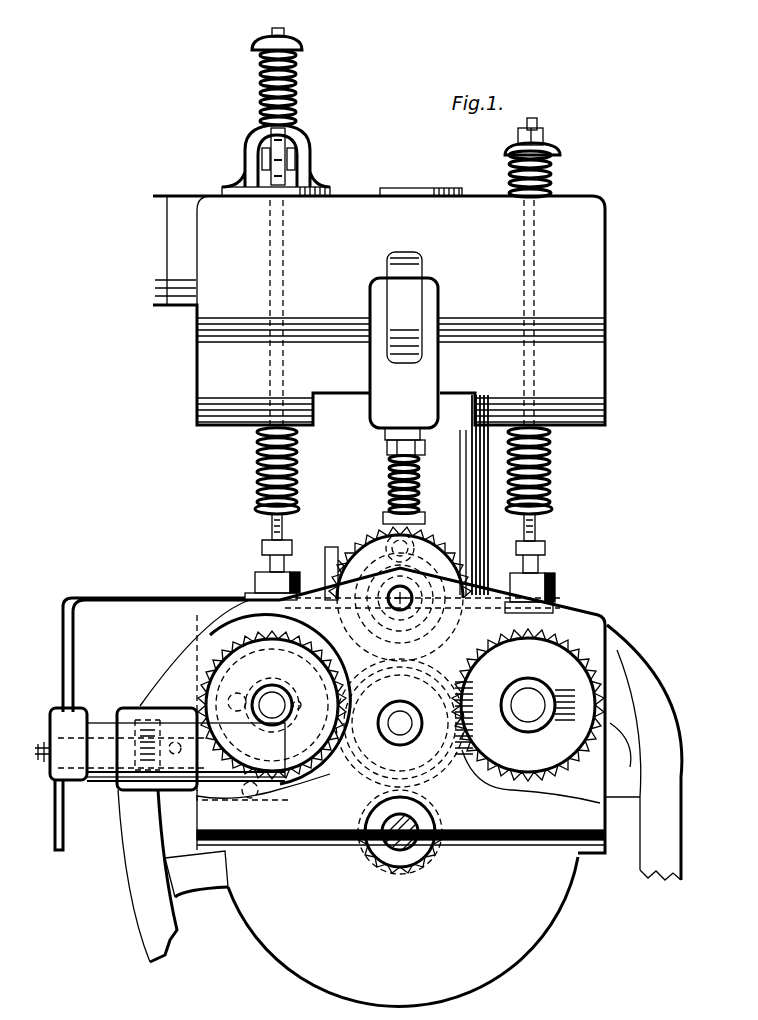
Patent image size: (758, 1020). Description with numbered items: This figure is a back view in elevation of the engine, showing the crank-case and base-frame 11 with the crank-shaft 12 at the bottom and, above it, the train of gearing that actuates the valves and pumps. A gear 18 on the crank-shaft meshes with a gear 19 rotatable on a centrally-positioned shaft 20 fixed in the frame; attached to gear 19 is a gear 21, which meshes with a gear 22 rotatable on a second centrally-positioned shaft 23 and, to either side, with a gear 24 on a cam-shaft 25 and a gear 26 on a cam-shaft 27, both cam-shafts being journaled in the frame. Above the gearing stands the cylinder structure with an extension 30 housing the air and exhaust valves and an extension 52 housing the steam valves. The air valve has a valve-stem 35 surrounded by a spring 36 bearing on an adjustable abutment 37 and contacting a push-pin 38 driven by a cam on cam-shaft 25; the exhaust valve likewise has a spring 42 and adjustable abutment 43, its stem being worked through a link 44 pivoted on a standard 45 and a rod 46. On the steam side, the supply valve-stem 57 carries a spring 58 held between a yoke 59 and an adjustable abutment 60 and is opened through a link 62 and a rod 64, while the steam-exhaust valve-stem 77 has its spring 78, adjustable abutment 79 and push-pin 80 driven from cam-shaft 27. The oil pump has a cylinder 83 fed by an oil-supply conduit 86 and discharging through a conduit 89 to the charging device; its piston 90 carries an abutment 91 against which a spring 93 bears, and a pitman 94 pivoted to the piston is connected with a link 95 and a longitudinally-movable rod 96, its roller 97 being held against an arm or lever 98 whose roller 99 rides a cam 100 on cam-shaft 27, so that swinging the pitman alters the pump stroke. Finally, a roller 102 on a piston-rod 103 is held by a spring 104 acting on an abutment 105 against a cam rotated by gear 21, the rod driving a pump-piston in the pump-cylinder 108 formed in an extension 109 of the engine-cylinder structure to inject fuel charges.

The crank-case and base-frame 11 is at (403, 931).
The crank-shaft 12 is at (410, 840).
The gear 18 is at (368, 860).
The gear 19 is at (440, 778).
The centrally-positioned shaft 20 is at (402, 712).
The gear 21 is at (400, 723).
The gear 22 is at (432, 548).
The centrally-positioned shaft 23 is at (412, 598).
The gear 24 is at (528, 705).
The cam-shaft 25 is at (530, 700).
The gear 26 is at (205, 689).
The cam-shaft 27 is at (272, 702).
The extension of the cylinder structure 30 is at (607, 282).
The valve-stem 35 is at (538, 531).
The spring 36 is at (552, 480).
The adjustable abutment 37 is at (554, 508).
The push-pin 38 is at (548, 560).
The spring 42 is at (551, 187).
The adjustable abutment 43 is at (561, 150).
The link 44 is at (537, 120).
The standard 45 is at (545, 138).
The rod 46 is at (538, 282).
The extension of the cylinder structure 52 is at (197, 250).
The valve-stem 57 is at (283, 33).
The spring 58 is at (297, 78).
The yoke 59 is at (311, 148).
The adjustable abutment 60 is at (302, 47).
The link 62 is at (265, 158).
The rod 64 is at (285, 242).
The valve-stem 77 is at (270, 528).
The spring 78 is at (258, 445).
The adjustable abutment 79 is at (255, 508).
The push-pin 80 is at (268, 560).
The cylinder 83 is at (80, 782).
The oil-supply conduit 86 is at (68, 835).
The conduit 89 is at (75, 652).
The piston 90 is at (171, 752).
The abutment 91 is at (164, 747).
The spring 93 is at (150, 792).
The pitman 94 is at (184, 792).
The link 95 is at (318, 772).
The longitudinally-movable rod 96 is at (332, 547).
The anti-friction roller or abutment 97 is at (256, 794).
The arm or lever 98 is at (272, 705).
The anti-friction roller 99 is at (240, 698).
The cam 100 is at (300, 702).
The anti-friction roller 102 is at (414, 552).
The piston-rod 103 is at (390, 474).
The spring 104 is at (420, 472).
The abutment 105 is at (392, 513).
The pump-cylinder 108 is at (404, 353).
The extension of the engine-cylinder structure 109 is at (428, 278).